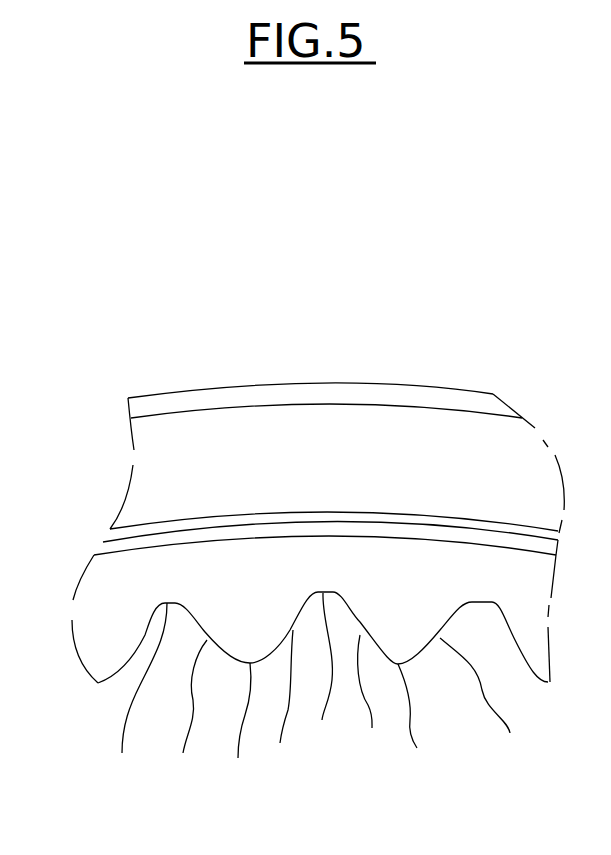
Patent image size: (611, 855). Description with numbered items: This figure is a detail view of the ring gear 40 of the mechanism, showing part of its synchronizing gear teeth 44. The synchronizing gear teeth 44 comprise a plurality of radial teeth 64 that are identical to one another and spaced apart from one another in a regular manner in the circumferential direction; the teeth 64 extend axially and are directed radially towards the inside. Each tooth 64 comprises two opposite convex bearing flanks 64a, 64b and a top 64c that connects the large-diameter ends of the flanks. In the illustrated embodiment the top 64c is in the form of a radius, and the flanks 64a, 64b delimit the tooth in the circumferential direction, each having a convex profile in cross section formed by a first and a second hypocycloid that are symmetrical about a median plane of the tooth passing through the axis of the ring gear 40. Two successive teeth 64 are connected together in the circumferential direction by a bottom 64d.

The ring gear 40 is at (439, 365).
The synchronizing gear teeth 44 is at (547, 718).
The radial teeth 64 is at (93, 657).
The first convex bearing flank 64a is at (278, 709).
The second convex bearing flank 64b is at (398, 702).
The top 64c is at (327, 726).
The bottom 64d is at (224, 688).